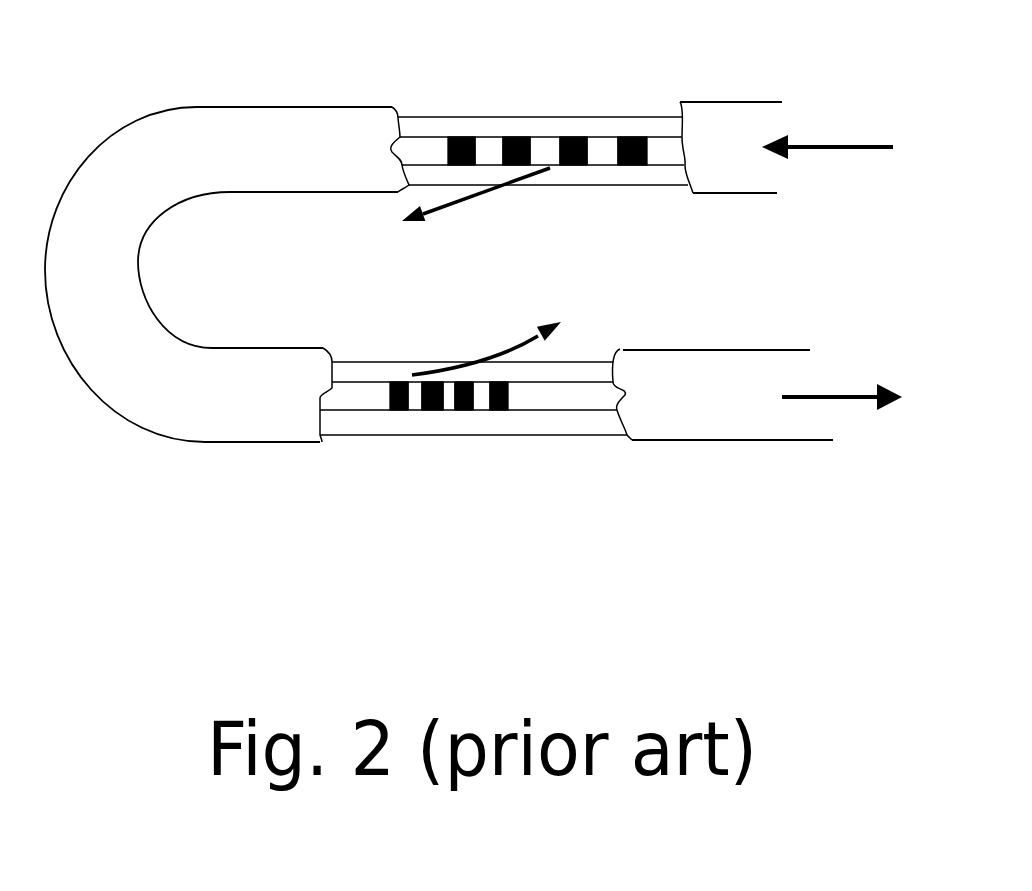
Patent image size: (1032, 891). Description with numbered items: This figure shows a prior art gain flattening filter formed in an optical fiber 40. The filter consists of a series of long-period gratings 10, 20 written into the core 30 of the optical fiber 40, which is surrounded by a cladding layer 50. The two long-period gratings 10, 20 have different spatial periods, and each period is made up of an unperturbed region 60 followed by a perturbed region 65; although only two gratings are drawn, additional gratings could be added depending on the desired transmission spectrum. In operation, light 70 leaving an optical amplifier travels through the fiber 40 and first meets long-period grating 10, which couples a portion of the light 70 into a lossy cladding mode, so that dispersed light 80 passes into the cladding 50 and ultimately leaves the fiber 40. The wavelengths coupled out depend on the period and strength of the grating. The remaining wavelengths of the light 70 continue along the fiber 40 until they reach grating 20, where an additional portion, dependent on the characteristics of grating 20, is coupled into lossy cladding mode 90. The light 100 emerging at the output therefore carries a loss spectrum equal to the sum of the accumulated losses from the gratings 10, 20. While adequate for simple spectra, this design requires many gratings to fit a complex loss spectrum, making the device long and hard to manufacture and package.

The long-period grating 10 is at (551, 126).
The long-period grating 20 is at (456, 414).
The core 30 is at (413, 152).
The optical fiber 40 is at (258, 133).
The cladding layer 50 is at (675, 180).
The unperturbed region 60 is at (492, 148).
The perturbed region 65 is at (458, 140).
The light 70 is at (827, 135).
The light 80 is at (452, 193).
The lossy cladding mode 90 is at (448, 368).
The light 100 is at (846, 366).